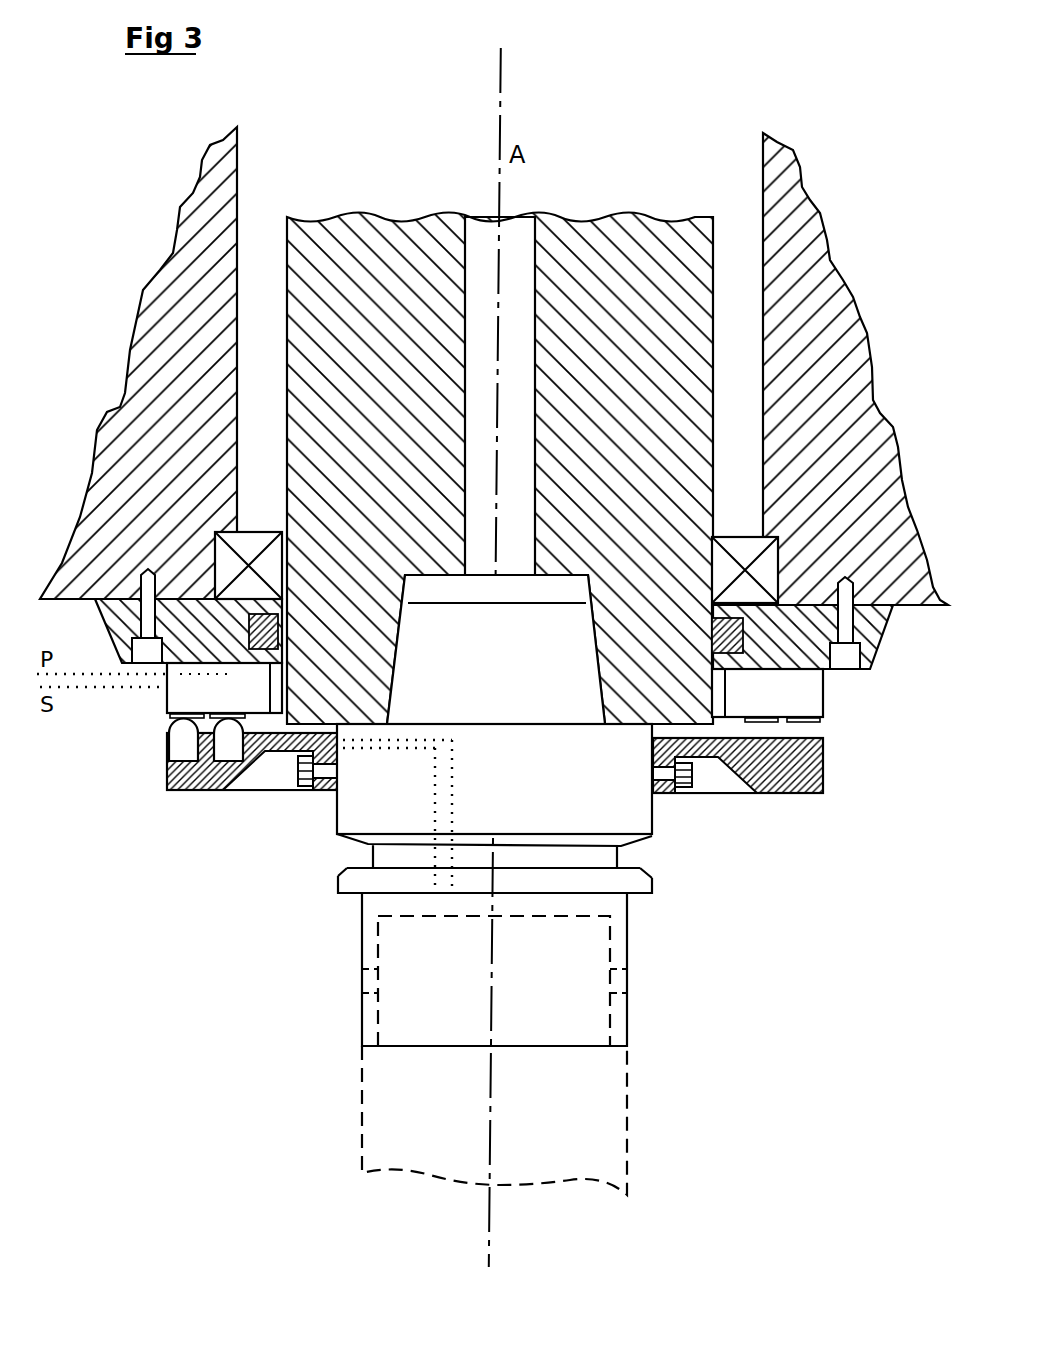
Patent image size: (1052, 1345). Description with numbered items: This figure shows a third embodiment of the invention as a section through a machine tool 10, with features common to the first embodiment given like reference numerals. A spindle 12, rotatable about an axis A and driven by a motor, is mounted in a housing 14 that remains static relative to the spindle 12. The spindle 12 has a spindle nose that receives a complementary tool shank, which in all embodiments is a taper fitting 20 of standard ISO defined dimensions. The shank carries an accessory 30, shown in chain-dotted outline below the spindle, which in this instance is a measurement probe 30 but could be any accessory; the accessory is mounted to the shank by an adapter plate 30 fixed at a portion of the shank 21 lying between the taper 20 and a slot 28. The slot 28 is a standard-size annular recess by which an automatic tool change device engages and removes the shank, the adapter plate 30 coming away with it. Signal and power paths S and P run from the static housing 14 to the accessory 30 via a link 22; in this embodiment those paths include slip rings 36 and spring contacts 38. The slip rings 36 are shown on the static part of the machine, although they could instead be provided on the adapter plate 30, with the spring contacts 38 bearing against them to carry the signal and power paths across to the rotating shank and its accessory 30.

The machine tool 10 is at (824, 172).
The spindle 12 is at (342, 217).
The housing 14 is at (177, 237).
The taper fitting 20 is at (470, 689).
The portion of the shank 21 is at (562, 797).
The inductive link 22 is at (146, 734).
The slot 28 is at (348, 851).
The accessory (measurement probe) and adapter plate 30 is at (784, 773).
The slip rings 36 is at (227, 714).
The spring contacts 38 is at (184, 748).